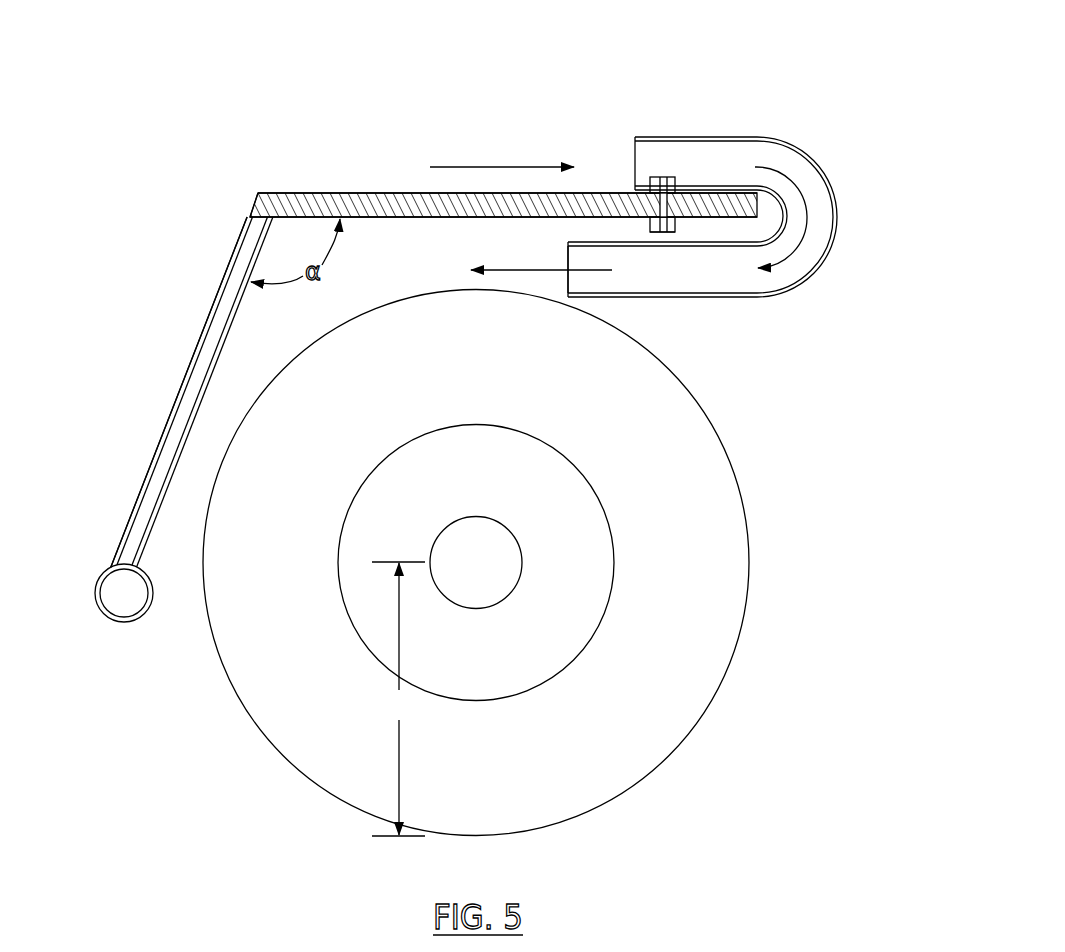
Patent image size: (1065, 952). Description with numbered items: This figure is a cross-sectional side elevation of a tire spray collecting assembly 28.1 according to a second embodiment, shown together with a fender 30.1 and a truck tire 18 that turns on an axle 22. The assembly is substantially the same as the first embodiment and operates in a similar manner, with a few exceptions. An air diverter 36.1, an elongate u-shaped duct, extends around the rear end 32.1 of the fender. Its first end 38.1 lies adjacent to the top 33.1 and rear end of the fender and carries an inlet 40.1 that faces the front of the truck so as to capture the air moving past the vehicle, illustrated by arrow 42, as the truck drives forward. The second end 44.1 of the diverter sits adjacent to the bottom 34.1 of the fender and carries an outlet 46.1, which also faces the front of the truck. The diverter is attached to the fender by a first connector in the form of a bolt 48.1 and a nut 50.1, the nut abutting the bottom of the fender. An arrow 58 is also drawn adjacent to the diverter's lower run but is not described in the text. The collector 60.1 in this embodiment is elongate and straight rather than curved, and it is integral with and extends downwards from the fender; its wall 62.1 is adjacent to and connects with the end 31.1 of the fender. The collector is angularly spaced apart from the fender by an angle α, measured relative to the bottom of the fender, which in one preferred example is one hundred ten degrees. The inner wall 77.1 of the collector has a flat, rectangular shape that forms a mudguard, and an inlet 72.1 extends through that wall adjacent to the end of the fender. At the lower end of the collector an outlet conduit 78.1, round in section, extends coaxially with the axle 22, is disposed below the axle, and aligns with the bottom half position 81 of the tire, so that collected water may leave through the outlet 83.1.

The tire 18 is at (710, 560).
The axle 22 is at (477, 563).
The tire spray collecting assembly 28.1 is at (709, 203).
The fender 30.1 is at (338, 191).
The end of fender 31.1 is at (256, 191).
The rear end of fender 32.1 is at (763, 225).
The top of fender 33.1 is at (395, 193).
The bottom of fender 34.1 is at (386, 217).
The air diverter 36.1 is at (771, 136).
The first end of diverter 38.1 is at (633, 138).
The inlet of diverter 40.1 is at (629, 148).
The arrow indicating moving air 42 is at (487, 166).
The second end of diverter 44.1 is at (568, 298).
The outlet of diverter 46.1 is at (564, 282).
The bolt 48.1 is at (668, 177).
The nut 50.1 is at (668, 232).
The belt return direction 58 is at (510, 270).
The collector 60.1 is at (187, 452).
The wall of collector 62.1 is at (238, 246).
The inlet of collector 72.1 is at (254, 300).
The inner wall of collector 77.1 is at (190, 428).
The outlet conduit 78.1 is at (96, 587).
The bottom half position of tire 81 is at (398, 699).
The outlet of collector 83.1 is at (119, 622).